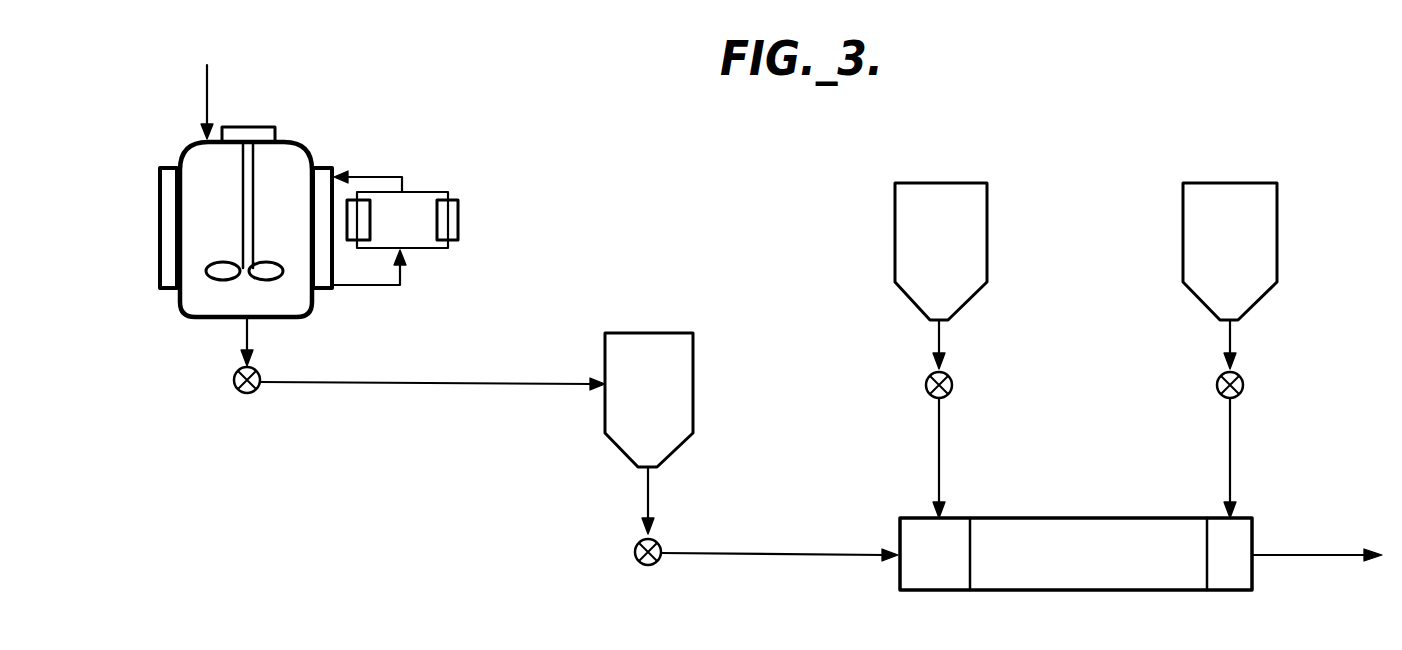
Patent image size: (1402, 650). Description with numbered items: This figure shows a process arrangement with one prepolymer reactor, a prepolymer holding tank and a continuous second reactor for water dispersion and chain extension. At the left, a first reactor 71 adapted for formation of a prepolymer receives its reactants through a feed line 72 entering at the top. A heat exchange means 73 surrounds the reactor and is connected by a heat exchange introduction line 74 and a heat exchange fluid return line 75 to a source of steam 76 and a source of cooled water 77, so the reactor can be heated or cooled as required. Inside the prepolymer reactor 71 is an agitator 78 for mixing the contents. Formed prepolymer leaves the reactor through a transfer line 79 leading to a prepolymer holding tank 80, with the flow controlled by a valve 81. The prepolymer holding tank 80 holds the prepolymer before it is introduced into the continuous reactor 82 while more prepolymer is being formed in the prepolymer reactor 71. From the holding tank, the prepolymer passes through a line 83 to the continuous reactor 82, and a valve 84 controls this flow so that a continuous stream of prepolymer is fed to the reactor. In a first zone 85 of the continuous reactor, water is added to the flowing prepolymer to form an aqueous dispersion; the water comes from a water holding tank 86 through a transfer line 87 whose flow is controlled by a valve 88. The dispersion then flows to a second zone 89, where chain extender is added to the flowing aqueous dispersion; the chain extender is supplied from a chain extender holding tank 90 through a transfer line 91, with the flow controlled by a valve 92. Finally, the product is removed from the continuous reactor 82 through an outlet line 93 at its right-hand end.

The first reactor 71 is at (308, 122).
The feed line 72 is at (211, 82).
The heat exchange means 73 is at (158, 210).
The heat exchange introduction line 74 is at (380, 172).
The heat exchange fluid return line 75 is at (352, 288).
The source of steam 76 is at (371, 222).
The source of cooled water 77 is at (460, 218).
The agitator 78 is at (215, 280).
The transfer line 79 is at (392, 382).
The prepolymer holding tank 80 is at (677, 333).
The valve 81 is at (259, 372).
The continuous reactor 82 is at (1083, 505).
The line 83 is at (652, 497).
The valve 84 is at (654, 540).
The first zone 85 is at (958, 518).
The water holding tank 86 is at (970, 183).
The transfer line 87 is at (942, 345).
The valve 88 is at (949, 378).
The second zone 89 is at (1243, 518).
The chain extender holding tank 90 is at (1258, 183).
The transfer line 91 is at (1235, 345).
The valve 92 is at (1240, 378).
The line 93 is at (1293, 554).